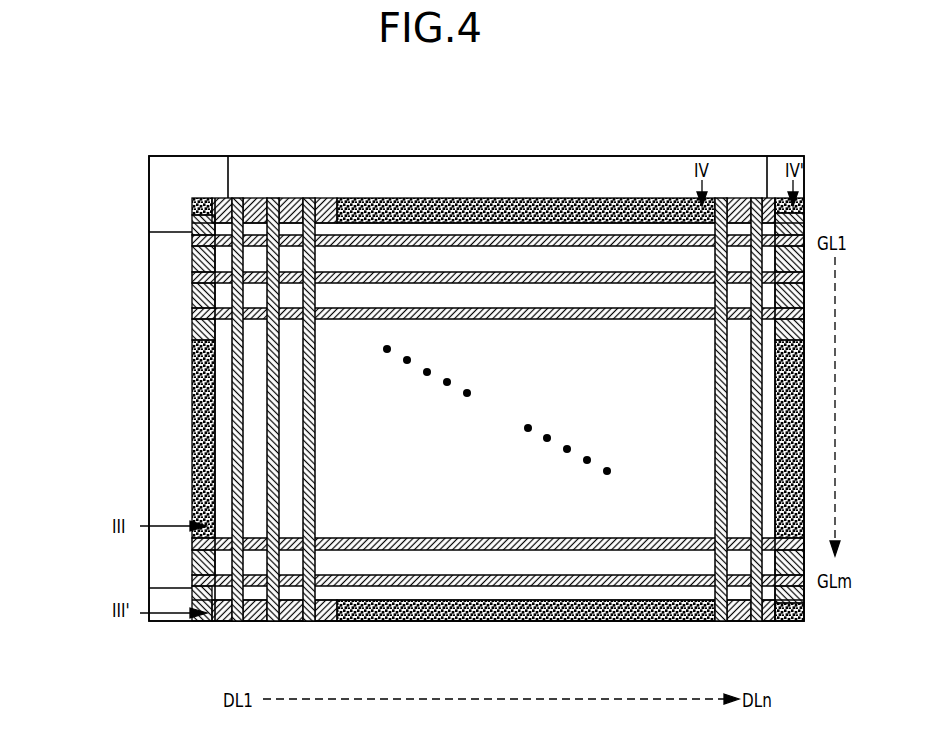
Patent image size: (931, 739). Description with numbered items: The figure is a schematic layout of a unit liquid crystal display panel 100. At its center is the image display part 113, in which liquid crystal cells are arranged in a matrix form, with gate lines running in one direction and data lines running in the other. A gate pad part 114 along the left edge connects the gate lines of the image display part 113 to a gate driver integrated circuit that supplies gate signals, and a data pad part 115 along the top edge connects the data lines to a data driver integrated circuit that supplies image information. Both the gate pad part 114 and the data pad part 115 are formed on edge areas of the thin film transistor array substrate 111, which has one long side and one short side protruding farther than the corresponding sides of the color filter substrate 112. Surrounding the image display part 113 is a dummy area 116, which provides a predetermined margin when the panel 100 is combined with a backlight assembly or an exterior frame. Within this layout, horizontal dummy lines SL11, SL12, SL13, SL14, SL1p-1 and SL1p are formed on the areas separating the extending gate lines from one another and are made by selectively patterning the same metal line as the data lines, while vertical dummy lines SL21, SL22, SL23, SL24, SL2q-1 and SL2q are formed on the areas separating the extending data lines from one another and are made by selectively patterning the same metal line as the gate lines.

The unit liquid crystal display panel 100 is at (807, 615).
The thin film transistor array substrate 111 is at (182, 156).
The color filter substrate 112 is at (203, 157).
The image display part 113 is at (494, 448).
The gate pad part 114 is at (90, 604).
The data pad part 115 is at (767, 122).
The dummy area 116 is at (372, 202).
The dummy line SL11 is at (192, 217).
The dummy line SL12 is at (192, 253).
The dummy line SL13 is at (192, 292).
The dummy line SL14 is at (192, 328).
The dummy line SL1p-1 is at (192, 558).
The dummy line SL1p is at (192, 590).
The dummy line SL21 is at (218, 622).
The dummy line SL22 is at (253, 622).
The dummy line SL23 is at (290, 622).
The dummy line SL24 is at (325, 622).
The dummy line SL2q-1 is at (738, 622).
The dummy line SL2q is at (773, 622).